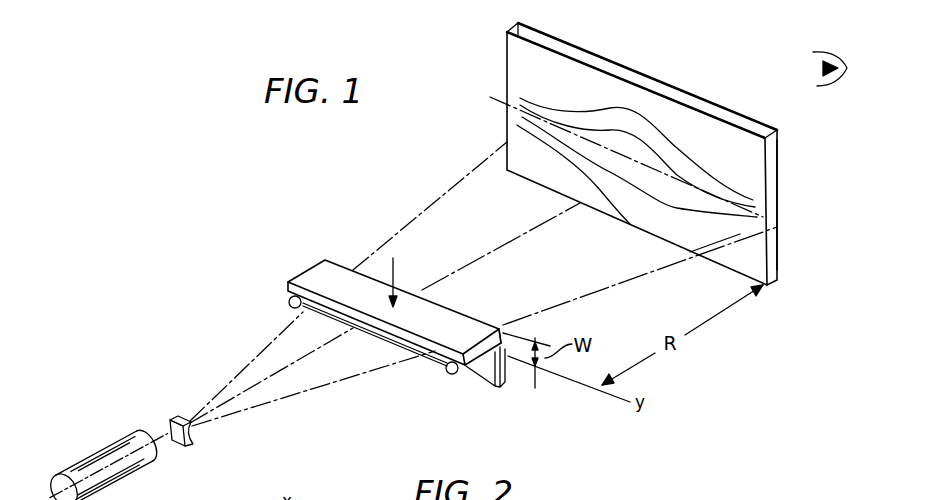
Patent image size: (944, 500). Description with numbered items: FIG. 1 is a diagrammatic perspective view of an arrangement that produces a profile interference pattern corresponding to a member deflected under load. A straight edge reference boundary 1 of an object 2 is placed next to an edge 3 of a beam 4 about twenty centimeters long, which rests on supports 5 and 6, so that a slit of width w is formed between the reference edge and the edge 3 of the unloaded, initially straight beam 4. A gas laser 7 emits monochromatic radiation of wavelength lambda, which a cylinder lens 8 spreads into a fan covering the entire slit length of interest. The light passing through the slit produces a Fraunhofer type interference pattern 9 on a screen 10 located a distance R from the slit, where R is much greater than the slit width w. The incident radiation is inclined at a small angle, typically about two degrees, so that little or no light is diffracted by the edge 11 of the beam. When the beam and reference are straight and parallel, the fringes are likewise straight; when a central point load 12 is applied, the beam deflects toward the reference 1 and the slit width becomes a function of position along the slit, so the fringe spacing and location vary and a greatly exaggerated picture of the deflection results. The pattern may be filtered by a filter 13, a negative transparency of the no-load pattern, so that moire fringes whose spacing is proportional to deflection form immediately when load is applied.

The straight edge reference boundary 1 is at (502, 327).
The object 2 is at (488, 368).
The edge of beam 3 is at (512, 343).
The beam 4 is at (422, 331).
The support 5 is at (286, 305).
The support 6 is at (450, 374).
The gas laser 7 is at (116, 480).
The cylinder lens 8 is at (190, 447).
The Fraunhofer type interference pattern 9 is at (532, 88).
The screen 10 is at (722, 268).
The edge 11 is at (433, 355).
The central point load 12 is at (393, 267).
The filter 13 is at (780, 183).